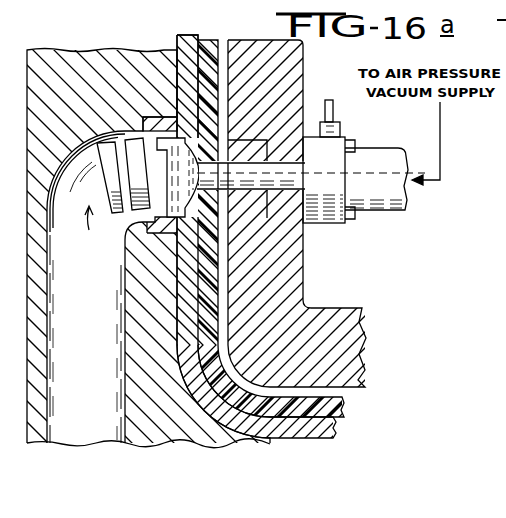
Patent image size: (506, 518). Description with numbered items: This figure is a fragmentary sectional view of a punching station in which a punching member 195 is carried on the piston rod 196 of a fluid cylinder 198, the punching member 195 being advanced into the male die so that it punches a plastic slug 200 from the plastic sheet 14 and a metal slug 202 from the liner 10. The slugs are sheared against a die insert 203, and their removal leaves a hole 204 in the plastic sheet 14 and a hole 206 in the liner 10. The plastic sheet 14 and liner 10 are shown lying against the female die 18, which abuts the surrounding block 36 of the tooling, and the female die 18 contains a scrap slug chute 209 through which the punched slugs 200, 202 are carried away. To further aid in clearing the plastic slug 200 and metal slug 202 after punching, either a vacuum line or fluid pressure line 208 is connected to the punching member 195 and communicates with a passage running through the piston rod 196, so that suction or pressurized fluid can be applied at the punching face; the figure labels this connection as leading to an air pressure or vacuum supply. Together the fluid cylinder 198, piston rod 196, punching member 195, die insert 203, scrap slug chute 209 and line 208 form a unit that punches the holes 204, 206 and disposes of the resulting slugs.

The metal slug 202 is at (92, 150).
The plastic slug 200 is at (124, 140).
The die insert 203 is at (157, 118).
The hole 206 is at (185, 130).
The hole 204 is at (236, 140).
The punching member 195 is at (124, 229).
The piston rod 196 is at (250, 197).
The fluid cylinder 198 is at (375, 207).
The vacuum line or fluid pressure line 208 is at (407, 193).
The clamp bar 36 is at (361, 354).
The plastic sheet 14 is at (337, 414).
The liner 10 is at (317, 438).
The female die 18 is at (208, 439).
The scrap slug chute 209 is at (92, 437).